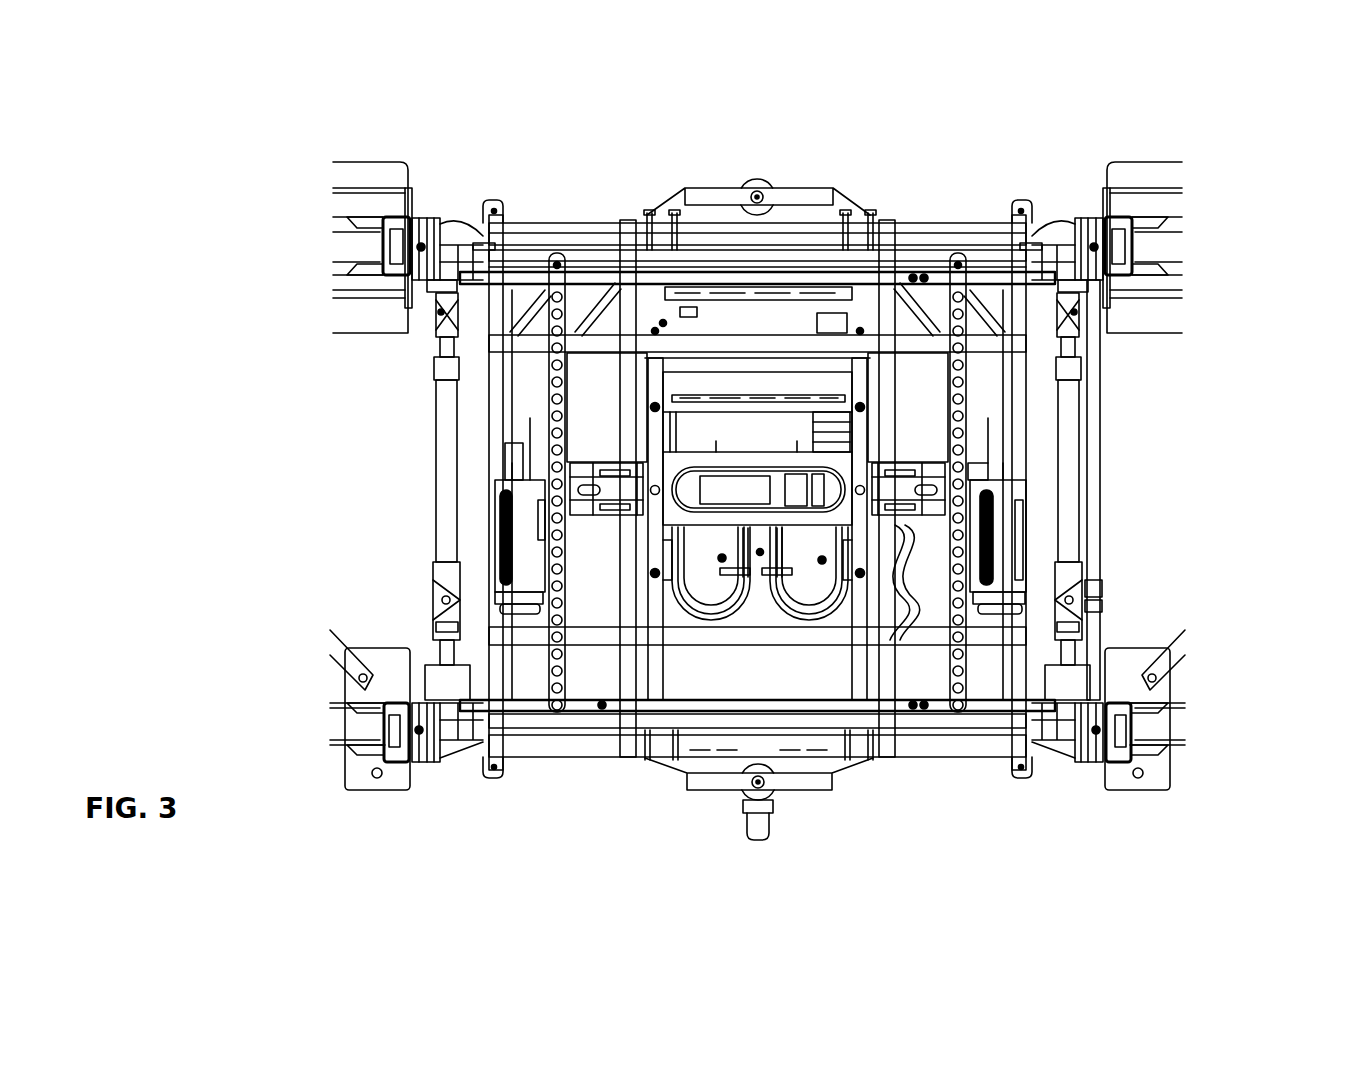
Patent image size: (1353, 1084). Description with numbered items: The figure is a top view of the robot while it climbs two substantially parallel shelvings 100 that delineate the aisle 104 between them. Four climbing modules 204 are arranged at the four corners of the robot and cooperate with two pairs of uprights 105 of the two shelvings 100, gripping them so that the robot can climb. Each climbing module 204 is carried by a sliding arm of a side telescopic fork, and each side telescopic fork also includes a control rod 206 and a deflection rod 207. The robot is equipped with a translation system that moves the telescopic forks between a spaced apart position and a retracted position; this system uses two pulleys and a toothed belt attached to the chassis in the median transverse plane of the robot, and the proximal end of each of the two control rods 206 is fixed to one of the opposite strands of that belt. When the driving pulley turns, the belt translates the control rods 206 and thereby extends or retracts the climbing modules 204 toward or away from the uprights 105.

The shelving 100 is at (370, 136).
The aisle 104 is at (575, 870).
The upright 105 is at (378, 224).
The climbing module 204 is at (458, 220).
The control rod 206 is at (613, 488).
The deflection rod 207 is at (543, 378).